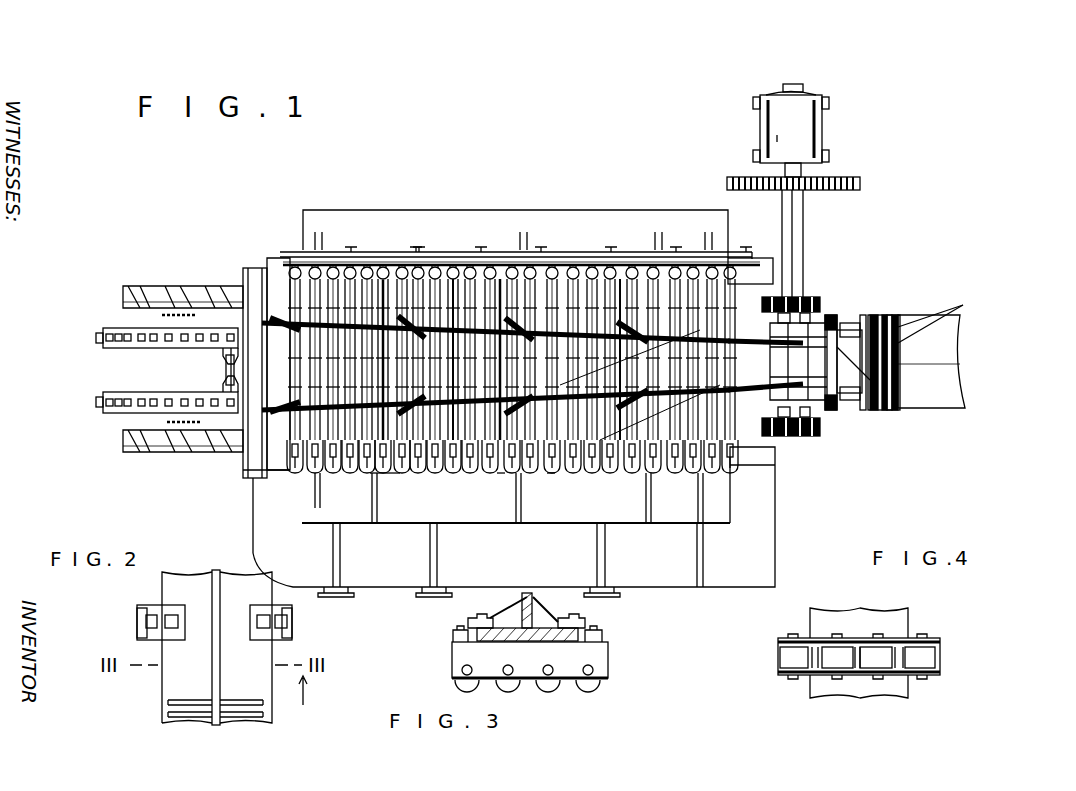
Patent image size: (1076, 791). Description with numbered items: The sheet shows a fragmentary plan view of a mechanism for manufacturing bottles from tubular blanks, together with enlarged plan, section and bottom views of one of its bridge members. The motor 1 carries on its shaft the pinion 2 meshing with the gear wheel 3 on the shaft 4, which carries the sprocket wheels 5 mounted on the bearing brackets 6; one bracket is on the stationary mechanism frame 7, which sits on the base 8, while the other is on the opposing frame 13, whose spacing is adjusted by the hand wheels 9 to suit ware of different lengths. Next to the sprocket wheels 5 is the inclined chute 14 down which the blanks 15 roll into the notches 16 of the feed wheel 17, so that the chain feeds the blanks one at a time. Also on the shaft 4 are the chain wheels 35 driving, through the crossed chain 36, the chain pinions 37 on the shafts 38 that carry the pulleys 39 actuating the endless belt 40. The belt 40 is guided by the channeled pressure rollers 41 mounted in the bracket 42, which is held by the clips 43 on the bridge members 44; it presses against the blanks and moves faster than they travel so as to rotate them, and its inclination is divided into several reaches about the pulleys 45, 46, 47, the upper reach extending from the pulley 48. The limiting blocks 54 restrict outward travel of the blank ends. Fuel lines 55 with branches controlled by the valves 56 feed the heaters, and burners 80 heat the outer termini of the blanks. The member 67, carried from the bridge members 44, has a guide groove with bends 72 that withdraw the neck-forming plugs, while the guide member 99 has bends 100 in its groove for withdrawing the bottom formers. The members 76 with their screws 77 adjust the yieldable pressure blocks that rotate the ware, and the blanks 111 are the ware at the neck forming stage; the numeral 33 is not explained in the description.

In FIG. 1, the motor 1 is at (826, 124).
In FIG. 1, the pinion 2 is at (808, 172).
In FIG. 1, the gear wheel 3 is at (862, 184).
In FIG. 1, the shaft 4 is at (802, 244).
In FIG. 1, the sprocket wheels 5 is at (835, 345).
In FIG. 1, the bearing brackets 6 is at (838, 335).
In FIG. 1, the stationary mechanism frame 7 is at (600, 210).
In FIG. 1, the base 8 is at (252, 512).
In FIG. 1, the hand wheels 9 is at (428, 597).
In FIG. 1, the opposing frame 13 is at (633, 523).
In FIG. 1, the inclined chute 14 is at (917, 318).
In FIG. 1, the blanks 15 is at (952, 310).
In FIG. 1, the notches 16 is at (893, 392).
In FIG. 1, the feed wheel 17 is at (872, 368).
In FIG. 1, the end plate 33 is at (230, 388).
In FIG. 1, the chain wheels 35 is at (832, 322).
In FIG. 1, the crossed chain 36 is at (840, 312).
In FIG. 1, the chain pinions 37 is at (790, 298).
In FIG. 1, the shafts 38 is at (804, 298).
In FIG. 1, the pulleys 39 is at (765, 306).
In FIG. 1, the endless belt 40 is at (352, 270).
In FIG. 3, the pressure rollers 41 is at (497, 683).
In FIG. 4, the pressure rollers 41 is at (781, 676).
In FIG. 3, the bracket 42 is at (612, 670).
In FIG. 4, the bracket 42 is at (823, 638).
In FIG. 1, the clips 43 is at (455, 268).
In FIG. 2, the clips 43 is at (248, 640).
In FIG. 3, the clips 43 is at (583, 635).
In FIG. 1, the bridge members 44 is at (290, 247).
In FIG. 2, the bridge members 44 is at (270, 690).
In FIG. 3, the bridge members 44 is at (603, 640).
In FIG. 4, the bridge members 44 is at (912, 617).
In FIG. 1, the pulleys 45 is at (295, 285).
In FIG. 1, the pulleys 46 is at (398, 270).
In FIG. 1, the pulleys 47 is at (387, 270).
In FIG. 1, the pulley 48 is at (620, 268).
In FIG. 1, the limiting blocks 54 is at (150, 287).
In FIG. 1, the fuel lines 55 is at (740, 248).
In FIG. 1, the valves 56 is at (418, 270).
In FIG. 1, the member 67 is at (445, 430).
In FIG. 1, the bends 72 is at (405, 430).
In FIG. 1, the members 76 is at (107, 320).
In FIG. 1, the screws 77 is at (97, 338).
In FIG. 1, the burners 80 is at (182, 312).
In FIG. 1, the guide member 99 is at (501, 455).
In FIG. 1, the bends 100 is at (554, 455).
In FIG. 1, the blanks 111 is at (235, 352).